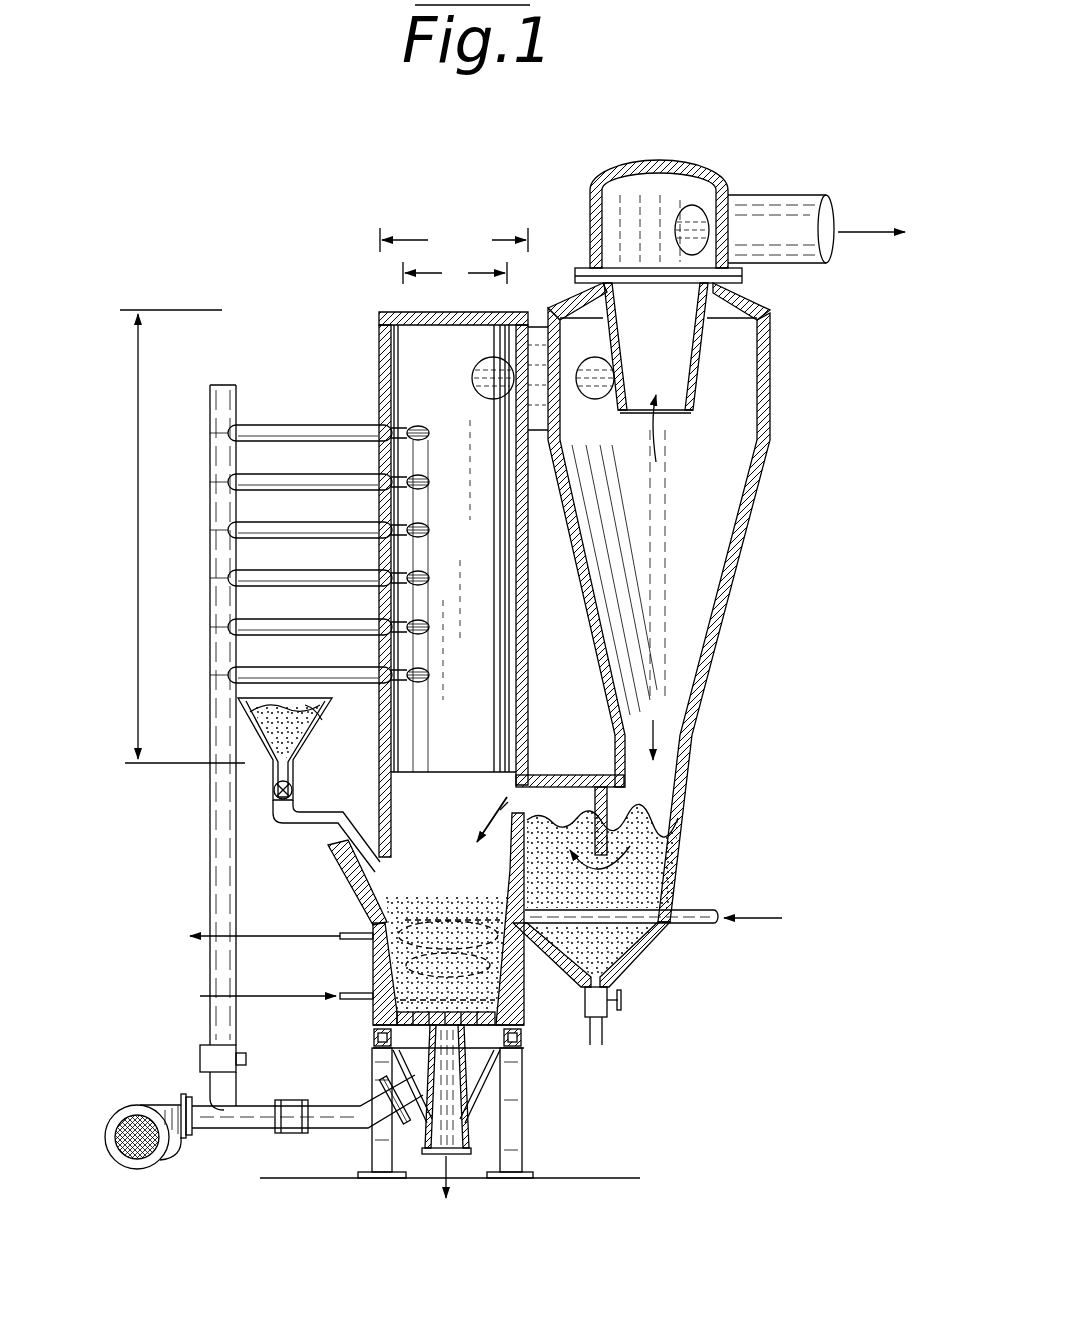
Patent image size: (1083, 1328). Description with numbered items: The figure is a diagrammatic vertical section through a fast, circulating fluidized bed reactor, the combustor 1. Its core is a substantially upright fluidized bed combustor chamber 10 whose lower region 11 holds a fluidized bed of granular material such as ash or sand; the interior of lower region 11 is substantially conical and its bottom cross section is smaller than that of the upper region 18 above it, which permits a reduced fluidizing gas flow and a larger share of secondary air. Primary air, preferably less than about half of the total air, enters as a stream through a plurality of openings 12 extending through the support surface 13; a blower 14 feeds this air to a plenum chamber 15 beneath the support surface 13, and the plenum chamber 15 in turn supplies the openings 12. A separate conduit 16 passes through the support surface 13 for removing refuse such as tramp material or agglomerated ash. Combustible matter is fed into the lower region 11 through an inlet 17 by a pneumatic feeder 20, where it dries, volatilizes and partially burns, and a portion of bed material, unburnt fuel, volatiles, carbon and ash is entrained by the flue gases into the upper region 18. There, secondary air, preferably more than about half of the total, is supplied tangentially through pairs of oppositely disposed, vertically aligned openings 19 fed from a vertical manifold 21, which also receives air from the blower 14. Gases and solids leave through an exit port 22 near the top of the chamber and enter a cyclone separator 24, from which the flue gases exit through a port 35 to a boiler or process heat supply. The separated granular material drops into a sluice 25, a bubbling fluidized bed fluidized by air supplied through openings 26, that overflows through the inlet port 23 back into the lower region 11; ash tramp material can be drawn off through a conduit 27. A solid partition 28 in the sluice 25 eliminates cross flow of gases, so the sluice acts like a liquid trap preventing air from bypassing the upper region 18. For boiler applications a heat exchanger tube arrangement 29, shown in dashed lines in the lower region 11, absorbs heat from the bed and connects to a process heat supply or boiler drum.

The combustor 1 is at (525, 172).
The fluidized bed combustor chamber 10 is at (529, 618).
The lower region 11 is at (478, 968).
The openings 12 is at (470, 1028).
The support surface 13 is at (505, 1040).
The blower 14 is at (166, 1127).
The plenum chamber 15 is at (427, 1122).
The conduit 16 is at (467, 1138).
The inlet 17 is at (378, 866).
The upper region 18 is at (466, 697).
The openings 19 is at (412, 430).
The pneumatic feeder 20 is at (300, 745).
The vertical manifold 21 is at (222, 560).
The exit port 22 is at (468, 443).
The inlet port 23 is at (533, 811).
The cyclone separator 24 is at (706, 676).
The sluice 25 is at (740, 778).
The openings 26 is at (645, 910).
The conduit 27 is at (604, 1035).
The solid partition 28 is at (591, 805).
The heat exchanger tube arrangement 29 is at (482, 1010).
The port 35 is at (700, 222).